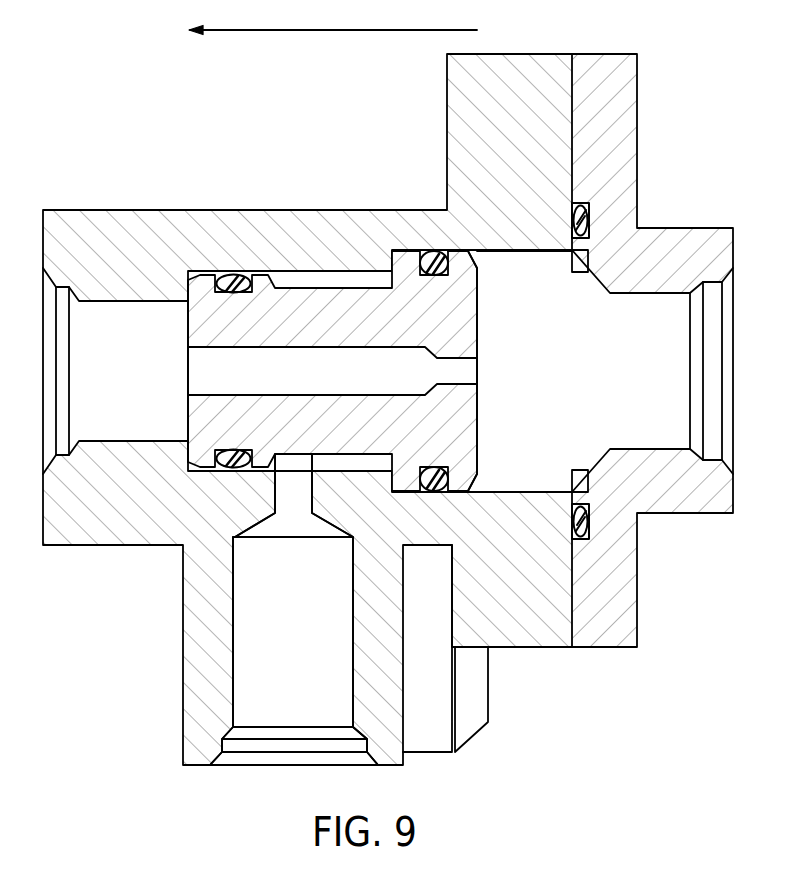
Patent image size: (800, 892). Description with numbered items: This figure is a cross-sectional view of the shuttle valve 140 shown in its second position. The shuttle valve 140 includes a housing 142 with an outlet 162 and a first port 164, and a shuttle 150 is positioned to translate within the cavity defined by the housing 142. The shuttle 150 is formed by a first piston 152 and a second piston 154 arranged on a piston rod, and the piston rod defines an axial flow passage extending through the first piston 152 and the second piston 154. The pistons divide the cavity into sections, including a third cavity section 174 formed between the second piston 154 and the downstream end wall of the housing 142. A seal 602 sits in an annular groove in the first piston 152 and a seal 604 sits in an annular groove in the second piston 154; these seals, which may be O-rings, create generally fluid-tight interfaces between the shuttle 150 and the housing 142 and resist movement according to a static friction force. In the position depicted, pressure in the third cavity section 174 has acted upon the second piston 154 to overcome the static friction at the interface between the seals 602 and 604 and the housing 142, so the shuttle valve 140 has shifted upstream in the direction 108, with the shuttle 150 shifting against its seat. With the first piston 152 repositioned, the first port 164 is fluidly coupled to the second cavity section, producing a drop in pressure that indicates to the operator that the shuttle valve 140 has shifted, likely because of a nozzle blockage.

The direction 108 is at (333, 34).
The shuttle valve 140 is at (416, 420).
The housing 142 is at (263, 243).
The shuttle 150 is at (318, 371).
The first piston 152 is at (195, 325).
The second piston 154 is at (470, 327).
The outlet 162 is at (715, 373).
The first port 164 is at (240, 760).
The third cavity section 174 is at (541, 471).
The seal 602 is at (233, 272).
The seal 604 is at (433, 255).